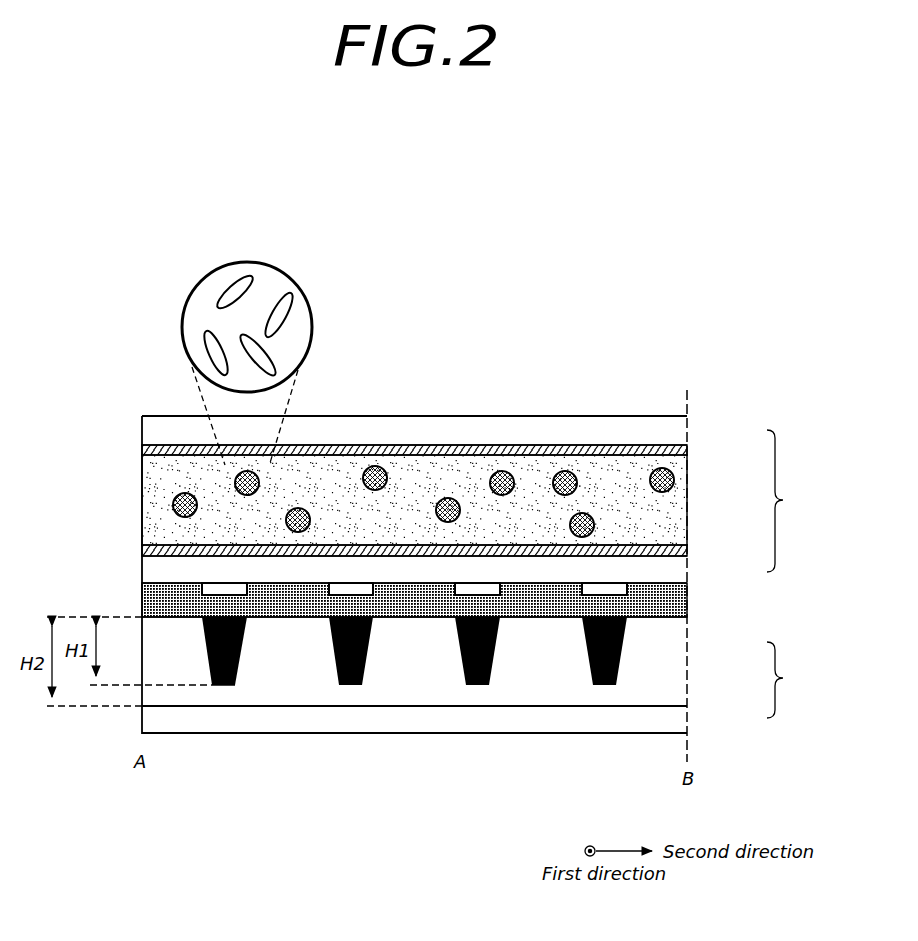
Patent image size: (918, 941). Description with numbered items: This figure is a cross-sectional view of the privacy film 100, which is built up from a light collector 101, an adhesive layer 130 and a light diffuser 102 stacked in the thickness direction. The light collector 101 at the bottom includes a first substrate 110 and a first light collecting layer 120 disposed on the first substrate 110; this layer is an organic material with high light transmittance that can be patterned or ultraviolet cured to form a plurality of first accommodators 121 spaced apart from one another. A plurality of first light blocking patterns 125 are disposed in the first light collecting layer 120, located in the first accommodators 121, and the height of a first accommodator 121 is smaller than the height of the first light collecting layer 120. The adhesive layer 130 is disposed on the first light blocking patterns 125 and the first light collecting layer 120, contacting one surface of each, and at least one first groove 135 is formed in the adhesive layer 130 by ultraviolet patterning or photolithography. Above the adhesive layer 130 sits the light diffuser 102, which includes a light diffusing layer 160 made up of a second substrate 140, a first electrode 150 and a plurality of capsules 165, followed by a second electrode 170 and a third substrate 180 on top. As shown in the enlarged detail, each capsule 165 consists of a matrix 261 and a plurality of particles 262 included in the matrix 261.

The privacy film 100 is at (143, 366).
The light collector 101 is at (795, 680).
The light diffuser 102 is at (795, 501).
The first substrate 110 is at (677, 719).
The first light collecting layer 120 is at (677, 679).
The first accommodator 121 is at (224, 695).
The first light blocking pattern 125 is at (623, 652).
The adhesive layer 130 is at (677, 601).
The first groove 135 is at (192, 593).
The second substrate 140 is at (677, 573).
The first electrode 150 is at (677, 553).
The light diffusing layer 160 is at (677, 521).
The capsule 165 is at (677, 481).
The second electrode 170 is at (677, 453).
The third substrate 180 is at (677, 431).
The matrix 261 is at (270, 288).
The particle 262 is at (230, 290).